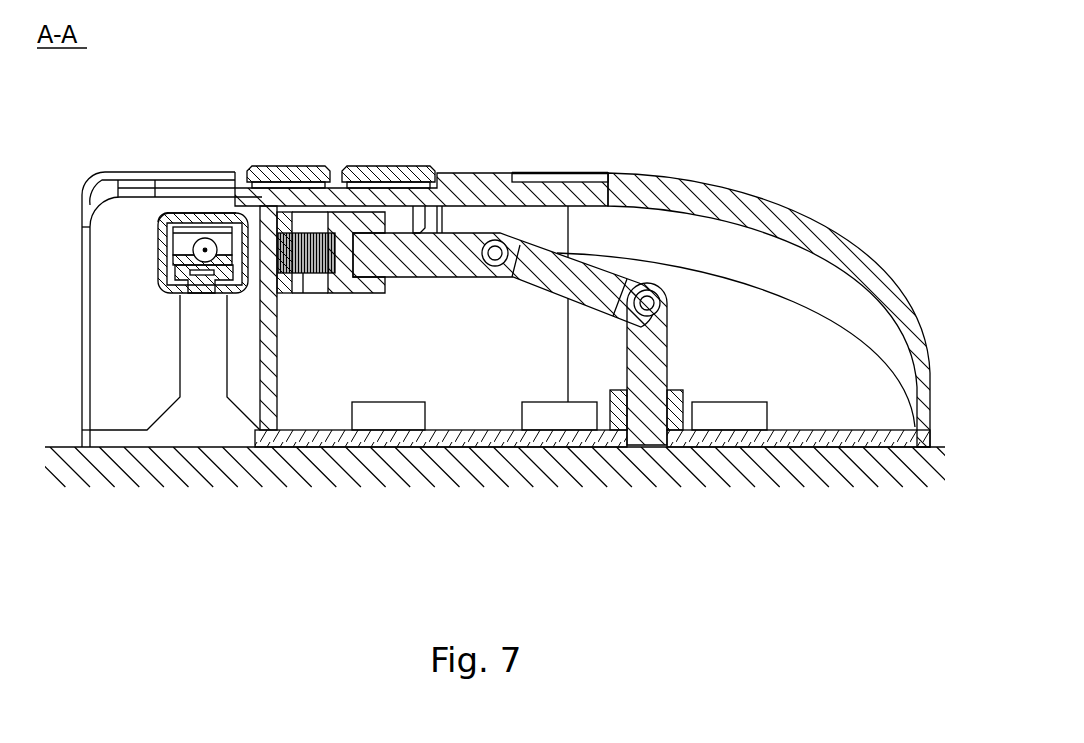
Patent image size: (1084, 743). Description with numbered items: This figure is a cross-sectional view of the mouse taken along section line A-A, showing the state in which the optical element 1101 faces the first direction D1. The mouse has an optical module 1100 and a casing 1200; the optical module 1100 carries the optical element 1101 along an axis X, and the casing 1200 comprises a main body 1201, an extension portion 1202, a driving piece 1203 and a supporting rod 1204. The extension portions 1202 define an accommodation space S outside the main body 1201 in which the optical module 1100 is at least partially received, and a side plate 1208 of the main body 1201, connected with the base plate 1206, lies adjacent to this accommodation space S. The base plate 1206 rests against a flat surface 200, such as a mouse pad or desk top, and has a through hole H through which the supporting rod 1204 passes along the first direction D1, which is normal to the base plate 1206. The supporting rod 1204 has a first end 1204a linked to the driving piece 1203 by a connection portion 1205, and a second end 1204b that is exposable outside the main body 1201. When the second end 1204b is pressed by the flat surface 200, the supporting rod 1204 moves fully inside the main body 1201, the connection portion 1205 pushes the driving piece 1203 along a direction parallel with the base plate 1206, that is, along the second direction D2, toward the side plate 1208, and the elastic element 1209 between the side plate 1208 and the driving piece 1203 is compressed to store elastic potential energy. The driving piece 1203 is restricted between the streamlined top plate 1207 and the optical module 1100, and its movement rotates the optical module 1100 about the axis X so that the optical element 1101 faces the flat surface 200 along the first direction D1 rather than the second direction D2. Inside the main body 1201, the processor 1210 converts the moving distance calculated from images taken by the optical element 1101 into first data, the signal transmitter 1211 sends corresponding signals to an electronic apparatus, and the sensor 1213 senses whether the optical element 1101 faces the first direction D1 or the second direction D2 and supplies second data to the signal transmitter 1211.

The flat surface 200 is at (867, 470).
The casing 1200 is at (696, 16).
The main body 1201 is at (807, 187).
The extension portion 1202 is at (113, 447).
The driving piece 1203 is at (488, 206).
The supporting rod 1204 is at (630, 430).
The first end 1204a is at (667, 303).
The second end 1204b is at (633, 432).
The connection portion 1205 is at (590, 298).
The base plate 1206 is at (480, 437).
The top plate 1207 is at (452, 196).
The side plate 1208 is at (267, 393).
The elastic element 1209 is at (322, 225).
The processor 1210 is at (390, 417).
The signal transmitter 1211 is at (557, 417).
The sensor 1213 is at (745, 417).
The optical module 1100 is at (199, 201).
The optical element 1101 is at (182, 213).
The axis X is at (205, 250).
The accommodation space S is at (125, 255).
The through hole H is at (672, 452).
The first direction D1 is at (290, 557).
The second direction D2 is at (290, 557).